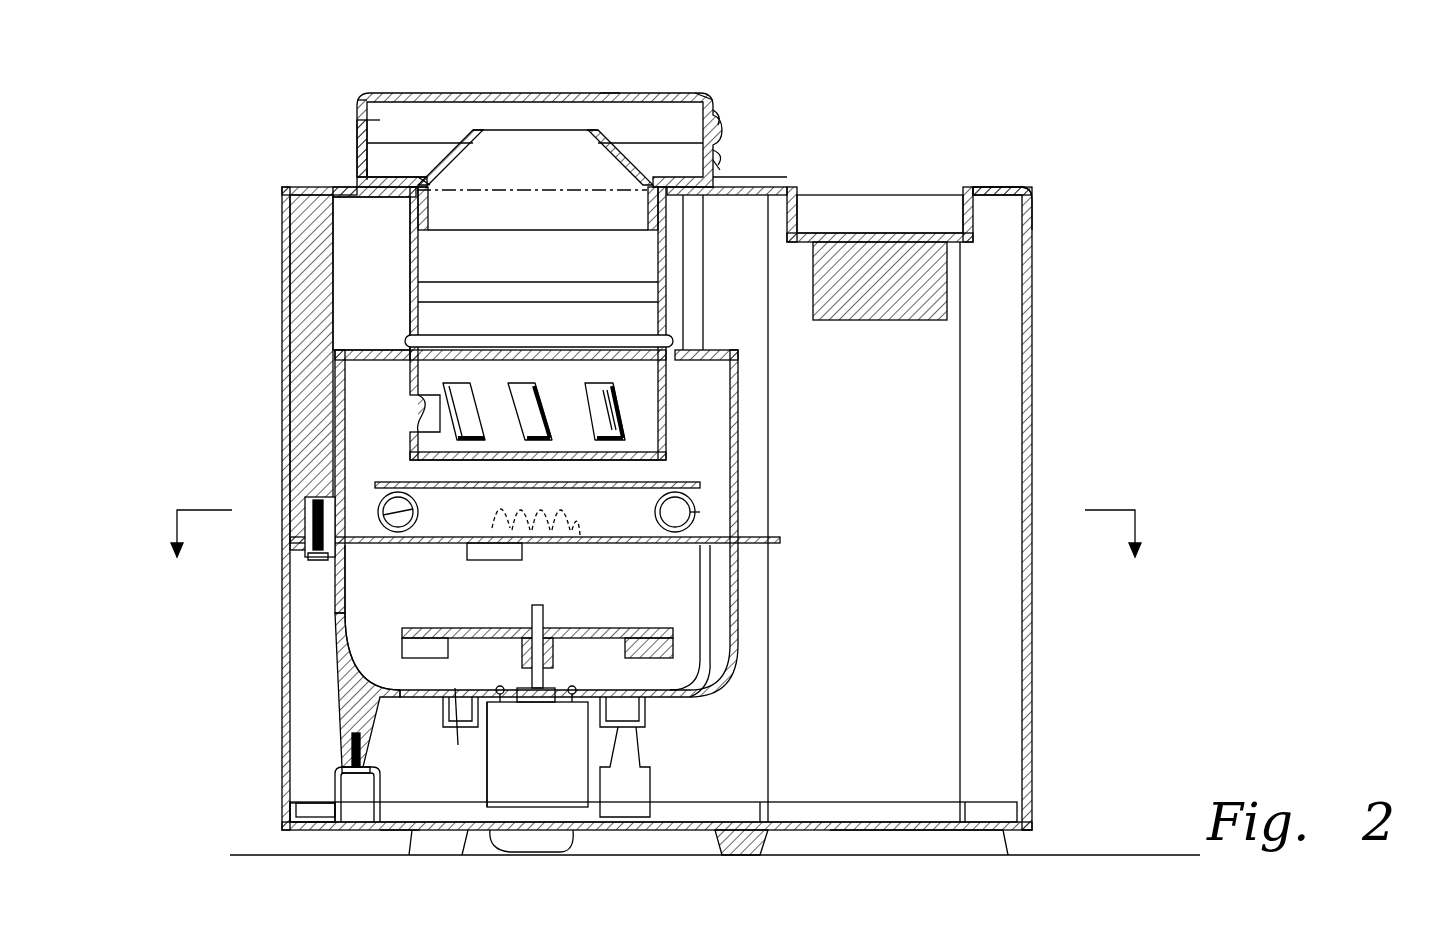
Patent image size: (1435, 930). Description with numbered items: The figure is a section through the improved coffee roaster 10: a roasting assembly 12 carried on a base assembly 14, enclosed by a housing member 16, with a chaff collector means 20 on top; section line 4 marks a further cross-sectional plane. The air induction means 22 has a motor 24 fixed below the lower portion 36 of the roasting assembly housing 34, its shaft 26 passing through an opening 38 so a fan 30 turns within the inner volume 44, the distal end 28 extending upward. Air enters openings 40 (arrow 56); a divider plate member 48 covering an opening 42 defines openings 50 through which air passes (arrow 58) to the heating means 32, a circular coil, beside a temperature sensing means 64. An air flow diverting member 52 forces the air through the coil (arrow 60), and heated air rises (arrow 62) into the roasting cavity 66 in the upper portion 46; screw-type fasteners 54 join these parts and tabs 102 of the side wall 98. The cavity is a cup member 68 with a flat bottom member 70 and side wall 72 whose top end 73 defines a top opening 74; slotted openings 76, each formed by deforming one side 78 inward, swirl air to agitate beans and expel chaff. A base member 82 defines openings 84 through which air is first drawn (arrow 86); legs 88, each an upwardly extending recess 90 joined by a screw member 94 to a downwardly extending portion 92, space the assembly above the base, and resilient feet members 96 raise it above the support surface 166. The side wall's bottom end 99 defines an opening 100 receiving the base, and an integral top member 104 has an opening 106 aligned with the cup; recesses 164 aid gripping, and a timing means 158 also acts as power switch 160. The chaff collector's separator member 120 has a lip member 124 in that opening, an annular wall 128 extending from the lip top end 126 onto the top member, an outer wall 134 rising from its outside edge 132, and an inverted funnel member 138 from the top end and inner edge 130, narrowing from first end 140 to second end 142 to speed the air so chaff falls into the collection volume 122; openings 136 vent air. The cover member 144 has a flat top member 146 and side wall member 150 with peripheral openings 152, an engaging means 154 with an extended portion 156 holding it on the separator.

The section line 4- 4 is at (656, 534).
The improved coffee roaster 10 is at (1190, 118).
The roasting assembly 12 is at (812, 468).
The base assembly 14 is at (795, 790).
The housing member 16 is at (1040, 360).
The chaff collector means 20 is at (657, 80).
The air induction means 22 is at (487, 720).
The motor 24 is at (537, 754).
The shaft 26 is at (555, 690).
The distal end 28 is at (545, 612).
The fan 30 is at (640, 628).
The heating means 32 is at (700, 515).
The roasting assembly housing 34 is at (790, 540).
The lower portion 36 is at (735, 660).
The opening 38 is at (630, 745).
The opening 40 is at (625, 700).
The opening 42 is at (333, 625).
The inner volume 44 is at (362, 690).
The upper portion 46 is at (745, 355).
The divider plate member 48 is at (740, 600).
The opening 50 is at (440, 538).
The air flow diverting member 52 is at (670, 482).
The screw-type fasteners 54 is at (318, 560).
The arrow 56 is at (462, 678).
The arrow 58 is at (489, 567).
The arrow 60 is at (352, 496).
The arrow 62 is at (428, 430).
The temperature sensing means 64 is at (530, 545).
The roasting cavity 66 is at (440, 296).
The cup member 68 is at (420, 318).
The bottom member 70 is at (440, 462).
The side wall 72 is at (675, 300).
The top end 73 is at (618, 282).
The top opening 74 is at (371, 273).
The openings 76 is at (415, 412).
The one side 78 is at (463, 408).
The base member 82 is at (885, 830).
The opening 84 is at (410, 800).
The arrow 86 is at (375, 830).
The leg 88 is at (300, 810).
The upwardly extending recess 90 is at (345, 790).
The downwardly extending portion 92 is at (352, 740).
The screw member 94 is at (340, 755).
The feet members 96 is at (440, 855).
The side wall 98 is at (1030, 476).
The bottom end 99 is at (935, 855).
The opening 100 is at (1025, 832).
The tabs 102 is at (315, 232).
The top member 104 is at (1000, 187).
The opening 106 is at (645, 172).
The separator member 120 is at (500, 148).
The collection volume 122 is at (380, 160).
The lip member 124 is at (435, 235).
The top end 126 is at (475, 192).
The annular wall 128 is at (375, 180).
The inner edge 130 is at (428, 180).
The outside edge 132 is at (372, 182).
The outer wall 134 is at (365, 170).
The openings 136 is at (718, 168).
The inverted funnel member 138 is at (612, 150).
The first end 140 is at (462, 160).
The second end 142 is at (545, 135).
The cover member 144 is at (713, 95).
The top member 146 is at (610, 92).
The side wall member 150 is at (367, 100).
The openings 152 is at (713, 100).
The engaging means 154 is at (718, 158).
The extended portion 156 is at (795, 185).
The timing means 158 is at (897, 215).
The power switch 160 is at (928, 210).
The recesses 164 is at (905, 650).
The support surface 166 is at (1130, 850).